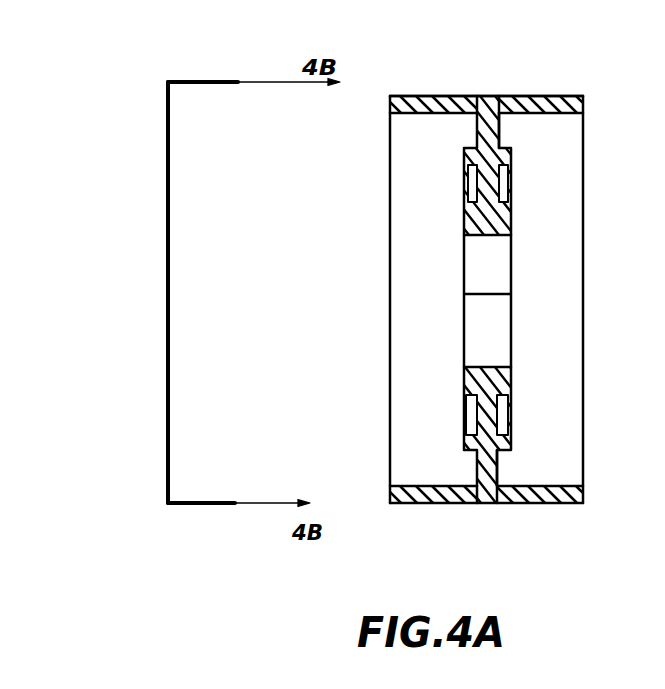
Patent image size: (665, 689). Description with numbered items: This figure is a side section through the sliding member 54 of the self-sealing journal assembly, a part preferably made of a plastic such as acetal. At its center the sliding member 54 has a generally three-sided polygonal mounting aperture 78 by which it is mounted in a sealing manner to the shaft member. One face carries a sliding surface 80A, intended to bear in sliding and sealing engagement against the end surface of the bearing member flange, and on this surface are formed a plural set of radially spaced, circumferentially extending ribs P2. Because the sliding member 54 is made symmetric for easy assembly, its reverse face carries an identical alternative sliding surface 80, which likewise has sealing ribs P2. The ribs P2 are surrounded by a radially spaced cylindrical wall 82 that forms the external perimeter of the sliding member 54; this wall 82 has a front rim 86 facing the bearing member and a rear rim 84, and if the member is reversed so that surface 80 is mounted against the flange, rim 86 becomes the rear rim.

The sliding member 54 is at (446, 96).
The cylindrical wall 82 is at (470, 97).
The rear rim 84 is at (389, 263).
The front rim 86 is at (583, 216).
The sliding surface 80 is at (477, 134).
The sliding surface 80A is at (499, 130).
The ribs P2 is at (464, 207).
The mounting aperture 78 is at (467, 328).